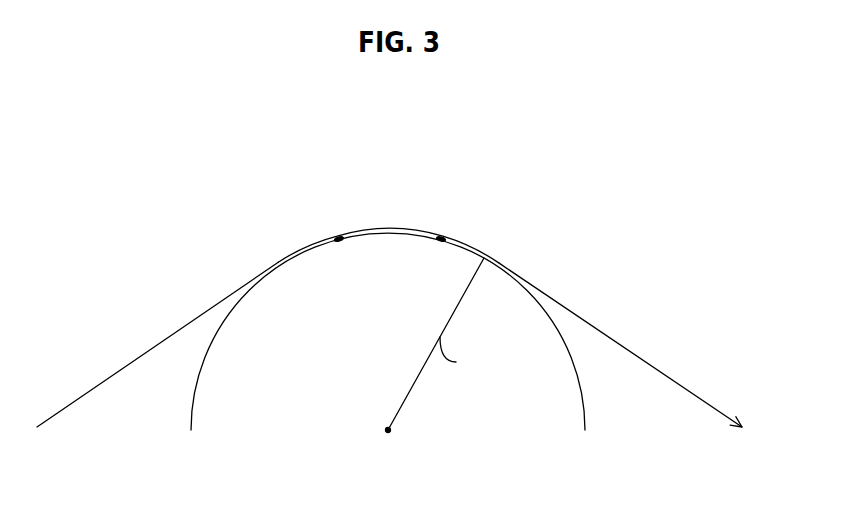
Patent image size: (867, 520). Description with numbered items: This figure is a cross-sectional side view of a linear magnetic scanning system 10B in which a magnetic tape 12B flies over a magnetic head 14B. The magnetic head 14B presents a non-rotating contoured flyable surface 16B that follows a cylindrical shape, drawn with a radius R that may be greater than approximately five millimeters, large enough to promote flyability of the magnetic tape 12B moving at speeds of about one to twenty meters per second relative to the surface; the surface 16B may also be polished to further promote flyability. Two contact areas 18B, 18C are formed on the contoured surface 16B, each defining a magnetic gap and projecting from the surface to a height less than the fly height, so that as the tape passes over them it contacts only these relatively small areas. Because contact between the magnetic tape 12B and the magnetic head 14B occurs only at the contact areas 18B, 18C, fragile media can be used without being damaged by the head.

The linear magnetic scanning system 10B is at (574, 206).
The magnetic tape 12B is at (93, 387).
The magnetic head 14B is at (186, 371).
The contoured surface 16B is at (230, 316).
The contact area 18B is at (352, 237).
The contact area 18C is at (450, 237).